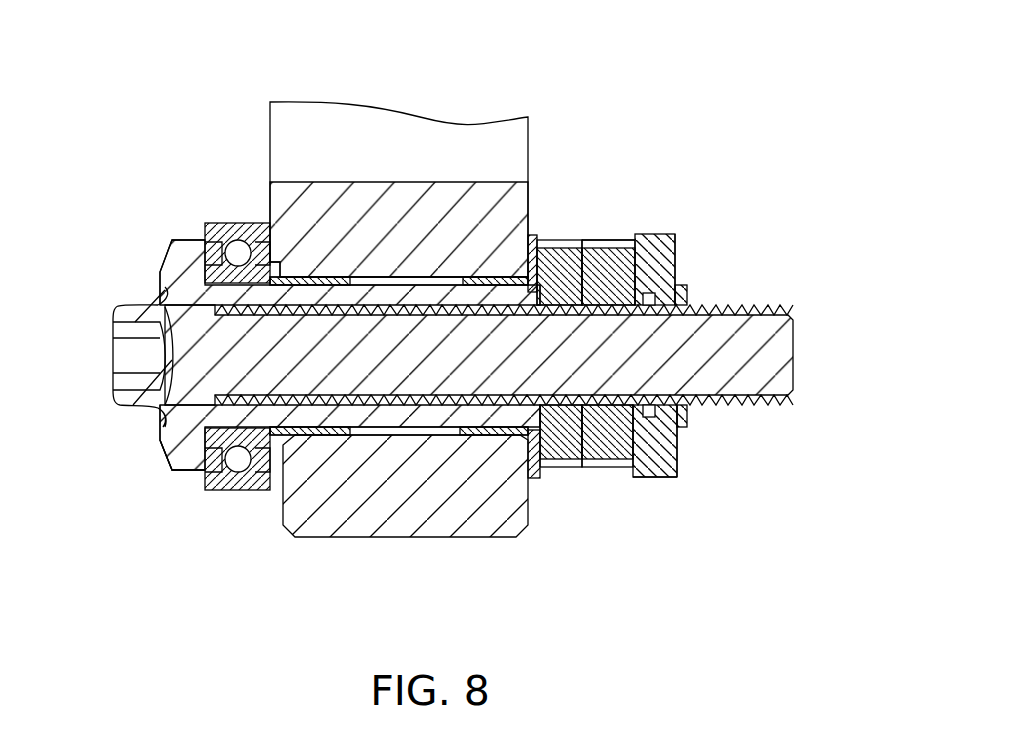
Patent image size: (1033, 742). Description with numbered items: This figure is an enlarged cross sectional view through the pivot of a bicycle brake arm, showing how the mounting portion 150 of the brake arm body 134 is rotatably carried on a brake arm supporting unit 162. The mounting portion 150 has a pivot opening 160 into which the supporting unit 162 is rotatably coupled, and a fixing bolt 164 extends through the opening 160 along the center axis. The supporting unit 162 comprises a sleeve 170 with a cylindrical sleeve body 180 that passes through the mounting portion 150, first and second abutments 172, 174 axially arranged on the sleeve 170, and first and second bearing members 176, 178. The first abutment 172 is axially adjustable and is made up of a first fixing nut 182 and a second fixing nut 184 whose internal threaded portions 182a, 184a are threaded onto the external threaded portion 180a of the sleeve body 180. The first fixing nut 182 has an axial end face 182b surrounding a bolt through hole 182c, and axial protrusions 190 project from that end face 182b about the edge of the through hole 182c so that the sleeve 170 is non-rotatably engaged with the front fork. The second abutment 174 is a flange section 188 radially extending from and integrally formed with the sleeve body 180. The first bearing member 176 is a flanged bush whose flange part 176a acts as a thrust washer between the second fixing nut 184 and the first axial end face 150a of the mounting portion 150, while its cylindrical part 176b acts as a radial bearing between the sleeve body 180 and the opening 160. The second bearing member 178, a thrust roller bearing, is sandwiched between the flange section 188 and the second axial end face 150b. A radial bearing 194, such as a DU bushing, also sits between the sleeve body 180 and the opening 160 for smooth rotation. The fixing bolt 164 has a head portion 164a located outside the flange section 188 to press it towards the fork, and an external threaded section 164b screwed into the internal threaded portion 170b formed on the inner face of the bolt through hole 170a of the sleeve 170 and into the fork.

The brake arm body 134 is at (608, 56).
The mounting portion 150 is at (454, 512).
The first axial end face 150a is at (540, 237).
The second axial end face 150b is at (240, 223).
The pivot opening 160 is at (307, 448).
The brake arm supporting unit 162 is at (665, 533).
The fixing bolt 164 is at (760, 355).
The head portion 164a is at (165, 410).
The external threaded section 164b is at (763, 300).
The sleeve 170 is at (152, 224).
The bolt through hole 170a is at (163, 307).
The internal threaded portion 170b is at (538, 318).
The first abutment 172 is at (598, 565).
The second abutment 174 is at (180, 505).
The first bearing member 176 is at (537, 480).
The flange part 176a is at (526, 457).
The cylindrical part 176b is at (526, 425).
The second bearing member 178 is at (232, 492).
The sleeve body 180 is at (388, 283).
The external threaded portion 180a is at (617, 265).
The first fixing nut 182 is at (622, 470).
The internal threaded portion 182a is at (667, 470).
The axial end face 182b is at (680, 456).
The bolt through hole 182c is at (713, 293).
The second fixing nut 184 is at (570, 468).
The internal threaded portion 184a is at (536, 266).
The flange section 188 is at (176, 466).
The axial protrusions 190 is at (689, 297).
The radial bearing 194 is at (335, 440).